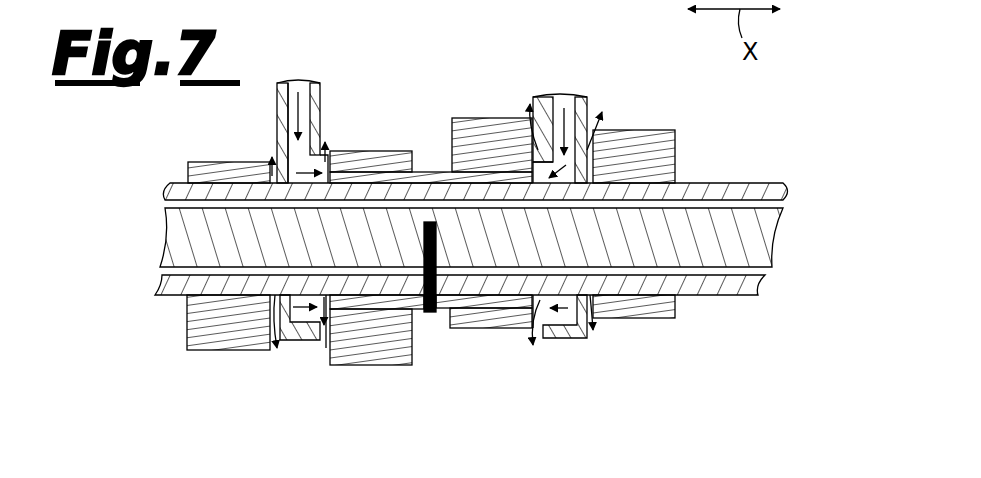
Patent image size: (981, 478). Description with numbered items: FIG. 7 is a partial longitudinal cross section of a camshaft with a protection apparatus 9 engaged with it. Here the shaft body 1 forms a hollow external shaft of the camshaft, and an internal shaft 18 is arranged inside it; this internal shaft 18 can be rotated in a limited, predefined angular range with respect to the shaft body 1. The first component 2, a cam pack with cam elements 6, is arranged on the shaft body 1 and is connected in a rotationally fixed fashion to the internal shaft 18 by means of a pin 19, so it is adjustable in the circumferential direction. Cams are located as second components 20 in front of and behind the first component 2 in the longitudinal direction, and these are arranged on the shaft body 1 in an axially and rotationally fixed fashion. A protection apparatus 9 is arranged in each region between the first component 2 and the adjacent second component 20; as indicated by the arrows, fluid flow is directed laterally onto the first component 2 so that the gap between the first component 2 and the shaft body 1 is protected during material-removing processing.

The shaft body 1 is at (492, 284).
The first component 2 is at (463, 75).
The cam elements 6 is at (463, 125).
The protection apparatus 9 is at (303, 348).
The internal shaft 18 is at (765, 252).
The pin 19 is at (440, 247).
The second components 20 is at (647, 143).